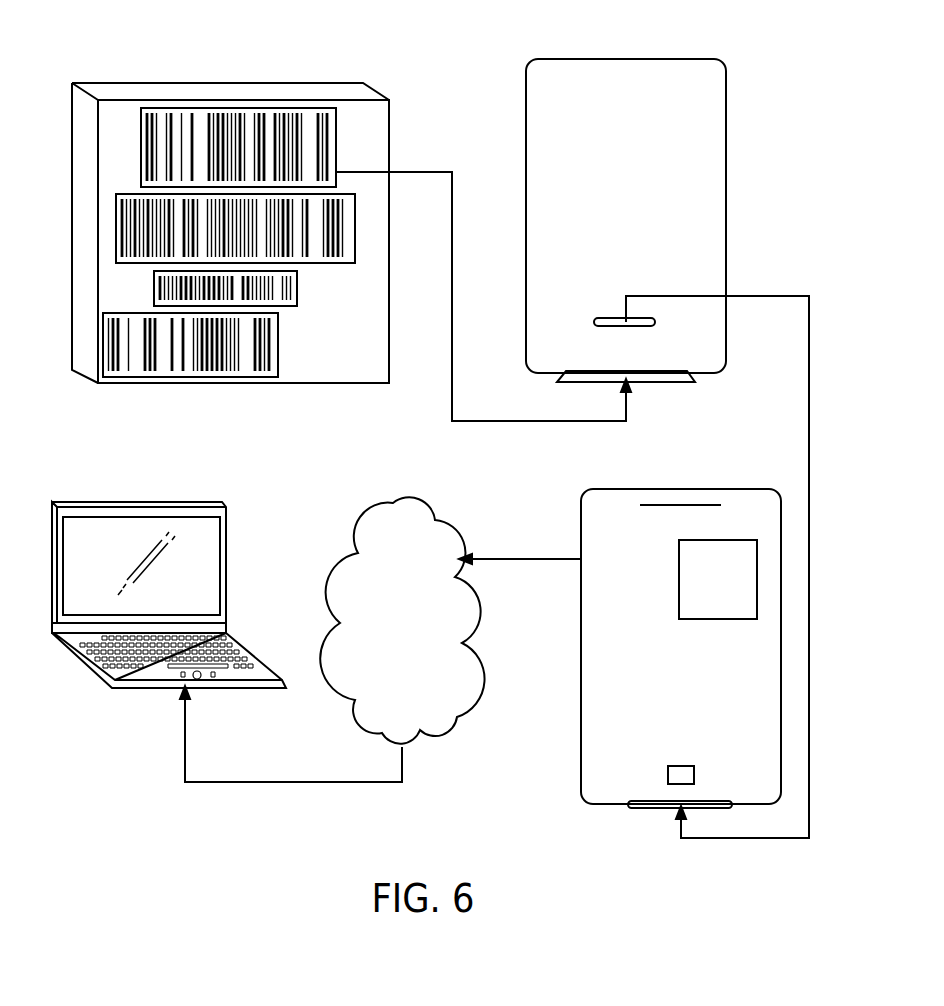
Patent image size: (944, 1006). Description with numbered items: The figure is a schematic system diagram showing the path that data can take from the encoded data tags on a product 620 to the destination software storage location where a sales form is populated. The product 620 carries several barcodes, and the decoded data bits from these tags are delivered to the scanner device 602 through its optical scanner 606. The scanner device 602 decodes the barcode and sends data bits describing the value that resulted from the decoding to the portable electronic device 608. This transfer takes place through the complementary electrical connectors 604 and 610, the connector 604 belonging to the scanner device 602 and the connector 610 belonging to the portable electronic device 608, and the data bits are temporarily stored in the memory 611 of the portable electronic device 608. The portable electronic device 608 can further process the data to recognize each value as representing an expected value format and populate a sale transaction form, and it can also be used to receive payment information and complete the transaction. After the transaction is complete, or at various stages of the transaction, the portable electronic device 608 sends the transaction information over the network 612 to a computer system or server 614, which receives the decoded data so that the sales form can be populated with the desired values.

The scanner device 602 is at (628, 58).
The complementary electrical connector 604 is at (594, 322).
The optical scanner 606 is at (695, 378).
The portable electronic device 608 is at (688, 489).
The complementary electrical connector 610 is at (640, 809).
The memory 611 is at (751, 556).
The network 612 is at (472, 658).
The server 614 is at (143, 502).
The product 620 is at (237, 84).